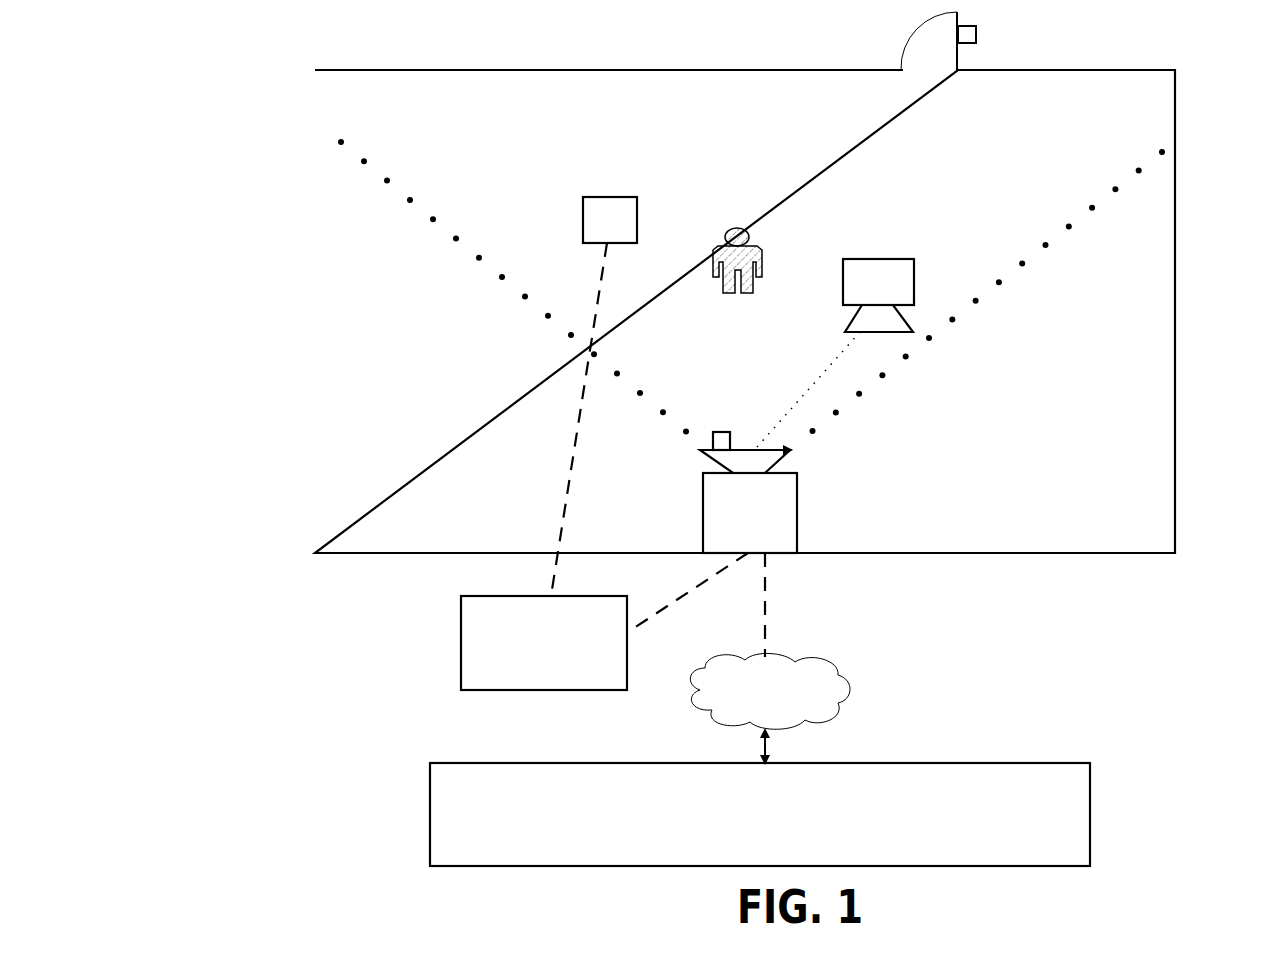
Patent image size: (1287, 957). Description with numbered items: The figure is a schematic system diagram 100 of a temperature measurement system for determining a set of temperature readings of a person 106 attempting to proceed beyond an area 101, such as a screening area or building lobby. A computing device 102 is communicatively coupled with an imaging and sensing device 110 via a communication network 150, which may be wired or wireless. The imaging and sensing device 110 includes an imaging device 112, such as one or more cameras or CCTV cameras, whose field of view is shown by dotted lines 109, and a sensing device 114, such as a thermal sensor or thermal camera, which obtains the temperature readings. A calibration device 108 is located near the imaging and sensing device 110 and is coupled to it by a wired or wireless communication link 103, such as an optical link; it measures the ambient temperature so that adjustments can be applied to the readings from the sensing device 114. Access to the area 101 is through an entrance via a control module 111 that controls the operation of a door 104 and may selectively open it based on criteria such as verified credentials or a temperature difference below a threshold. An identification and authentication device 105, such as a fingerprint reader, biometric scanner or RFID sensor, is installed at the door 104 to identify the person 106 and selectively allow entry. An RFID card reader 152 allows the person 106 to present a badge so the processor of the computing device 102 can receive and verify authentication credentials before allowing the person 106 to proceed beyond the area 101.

The system diagram 100 is at (184, 74).
The area 101 is at (1175, 72).
The computing device 102 is at (760, 814).
The communication link 103 is at (801, 402).
The door 104 is at (918, 28).
The identification and authentication device 105 is at (963, 27).
The person 106 is at (713, 264).
The calibration device 108 is at (912, 278).
The dotted lines 109 is at (527, 297).
The imaging and sensing device 110 is at (700, 503).
The control module 111 is at (613, 466).
The imaging device 112 is at (700, 453).
The sensing device 114 is at (717, 425).
The communication network 150 is at (850, 692).
The RFID card reader 152 is at (625, 195).